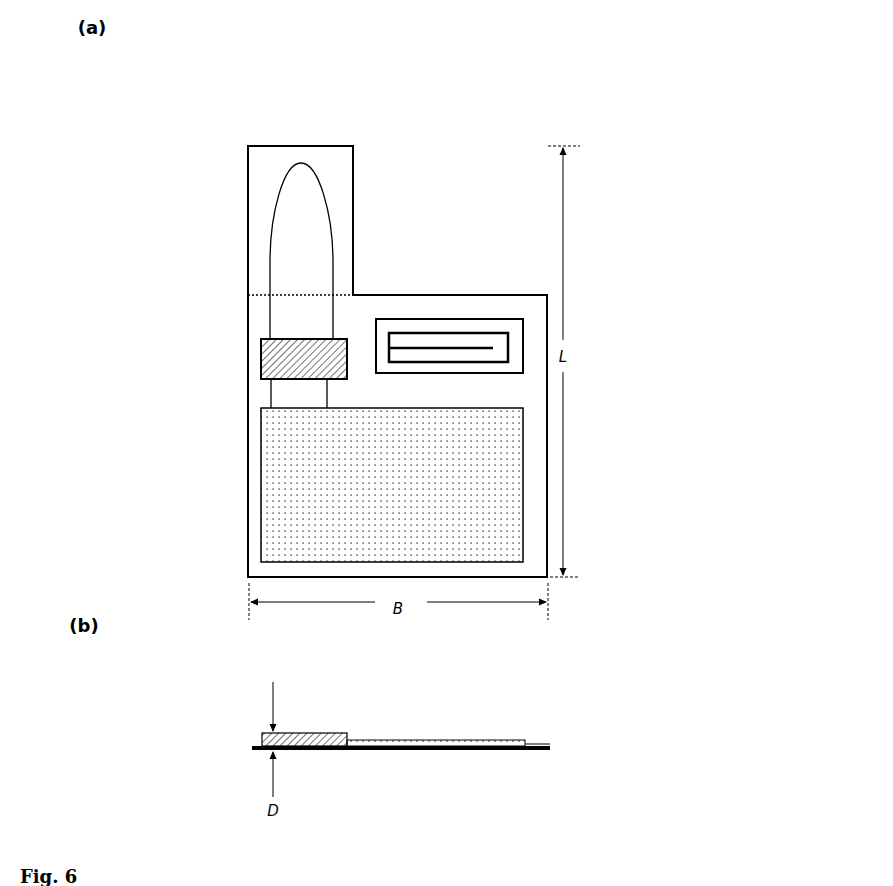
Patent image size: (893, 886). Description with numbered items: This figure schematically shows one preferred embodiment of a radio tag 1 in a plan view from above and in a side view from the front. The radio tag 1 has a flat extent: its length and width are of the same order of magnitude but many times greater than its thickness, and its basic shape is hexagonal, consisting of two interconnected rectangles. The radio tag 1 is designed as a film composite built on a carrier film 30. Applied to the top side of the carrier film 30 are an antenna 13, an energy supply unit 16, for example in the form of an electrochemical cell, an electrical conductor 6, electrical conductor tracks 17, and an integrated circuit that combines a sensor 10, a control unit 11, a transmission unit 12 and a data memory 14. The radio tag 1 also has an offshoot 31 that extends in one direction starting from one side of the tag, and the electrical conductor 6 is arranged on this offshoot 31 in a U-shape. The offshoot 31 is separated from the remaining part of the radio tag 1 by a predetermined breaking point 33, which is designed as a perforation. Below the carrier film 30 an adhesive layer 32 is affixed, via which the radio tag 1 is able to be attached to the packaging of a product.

The radio tag 1 is at (259, 113).
The offshoot 31 is at (246, 185).
The predetermined breaking point 33 is at (257, 292).
The electrical conductor 6 is at (267, 265).
The sensor 10 is at (236, 535).
The control unit 11 is at (236, 535).
The transmission unit 12 is at (236, 535).
The data memory 14 is at (258, 356).
The electrical conductor tracks 17 is at (330, 396).
The energy supply unit 16 is at (258, 492).
The carrier film 30 is at (385, 308).
The antenna 13 is at (451, 317).
The adhesive layer 32 is at (510, 753).